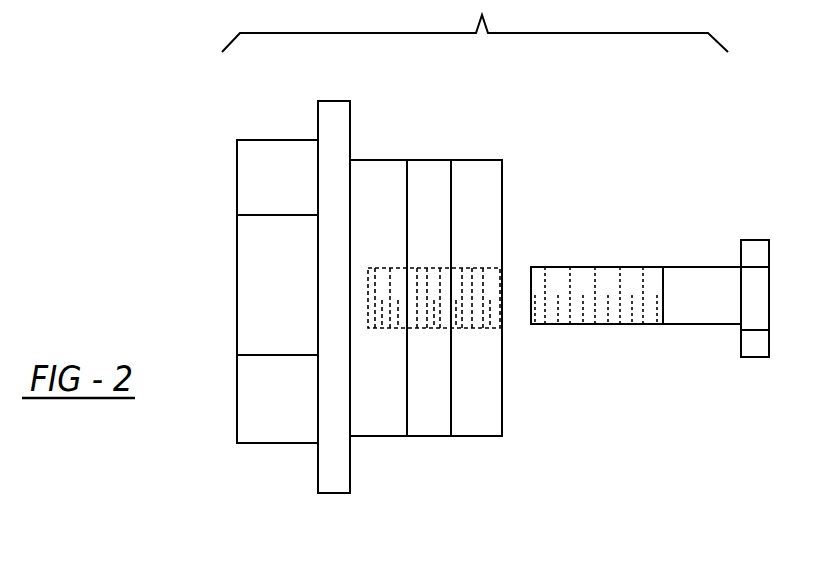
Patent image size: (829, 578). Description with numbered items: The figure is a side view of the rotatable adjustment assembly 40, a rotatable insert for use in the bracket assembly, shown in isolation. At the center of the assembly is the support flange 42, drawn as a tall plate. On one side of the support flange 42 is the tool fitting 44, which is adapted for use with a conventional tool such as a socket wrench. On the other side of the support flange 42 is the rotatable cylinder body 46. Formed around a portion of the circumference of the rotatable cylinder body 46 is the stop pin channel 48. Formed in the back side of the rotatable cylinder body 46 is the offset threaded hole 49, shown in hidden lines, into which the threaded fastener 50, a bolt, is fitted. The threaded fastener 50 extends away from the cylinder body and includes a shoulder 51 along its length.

The rotatable adjustment assembly 40 is at (202, 127).
The support flange 42 is at (330, 473).
The tool fitting 44 is at (265, 295).
The rotatable cylinder body 46 is at (483, 180).
The stop pin channel 48 is at (410, 188).
The offset threaded hole 49 is at (470, 322).
The threaded fastener 50 is at (750, 252).
The shoulder 51 is at (680, 325).